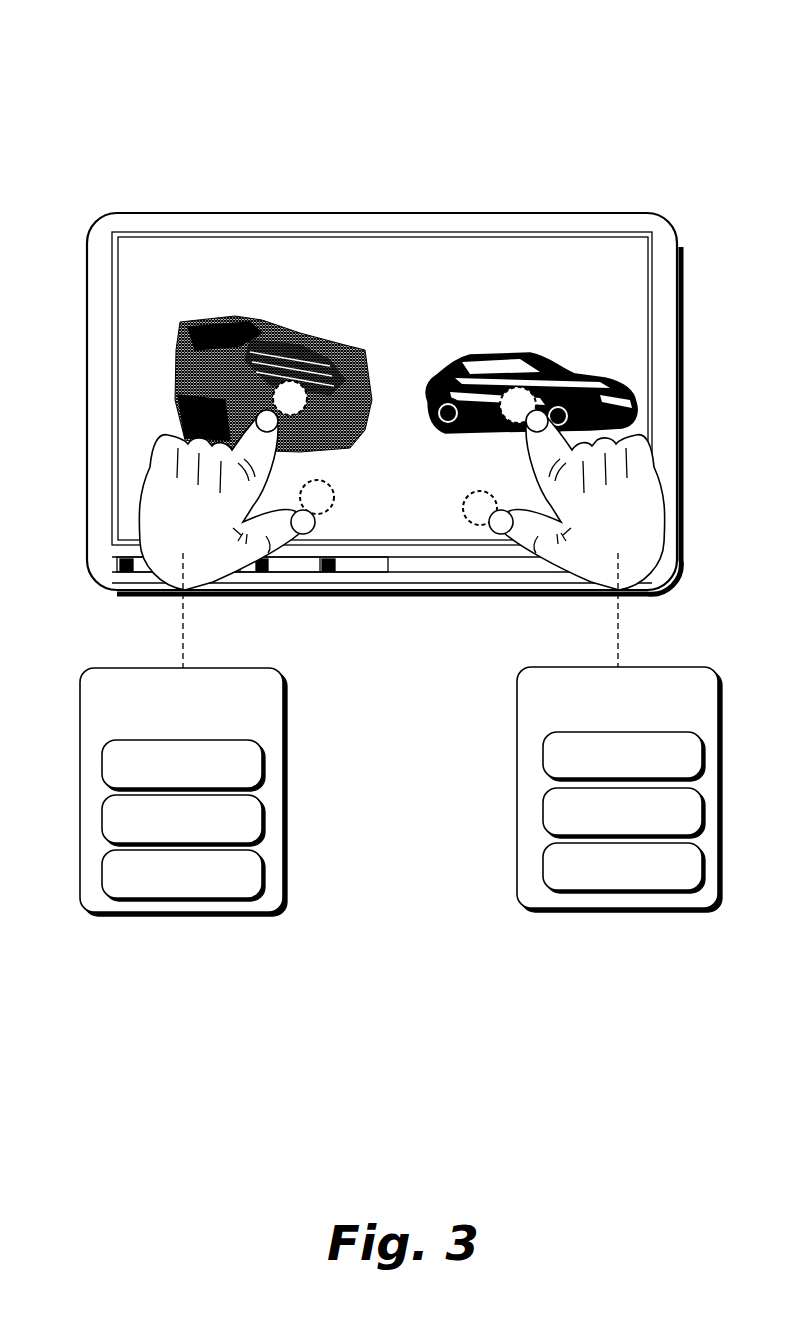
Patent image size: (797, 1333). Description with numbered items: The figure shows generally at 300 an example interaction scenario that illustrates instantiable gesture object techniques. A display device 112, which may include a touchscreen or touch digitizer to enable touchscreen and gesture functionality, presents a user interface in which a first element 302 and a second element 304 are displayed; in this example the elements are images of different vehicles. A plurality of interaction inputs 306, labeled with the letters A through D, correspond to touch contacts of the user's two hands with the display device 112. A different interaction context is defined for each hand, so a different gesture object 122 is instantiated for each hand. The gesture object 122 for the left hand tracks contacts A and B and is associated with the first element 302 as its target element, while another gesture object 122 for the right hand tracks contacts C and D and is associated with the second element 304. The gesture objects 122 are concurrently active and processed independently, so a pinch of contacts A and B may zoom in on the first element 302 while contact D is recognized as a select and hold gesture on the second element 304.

The interaction scenario 300 is at (110, 42).
The display device 112 is at (613, 265).
The first element 302 is at (213, 315).
The second element 304 is at (495, 338).
The interaction inputs 306 is at (493, 422).
The gesture object 122 is at (668, 725).